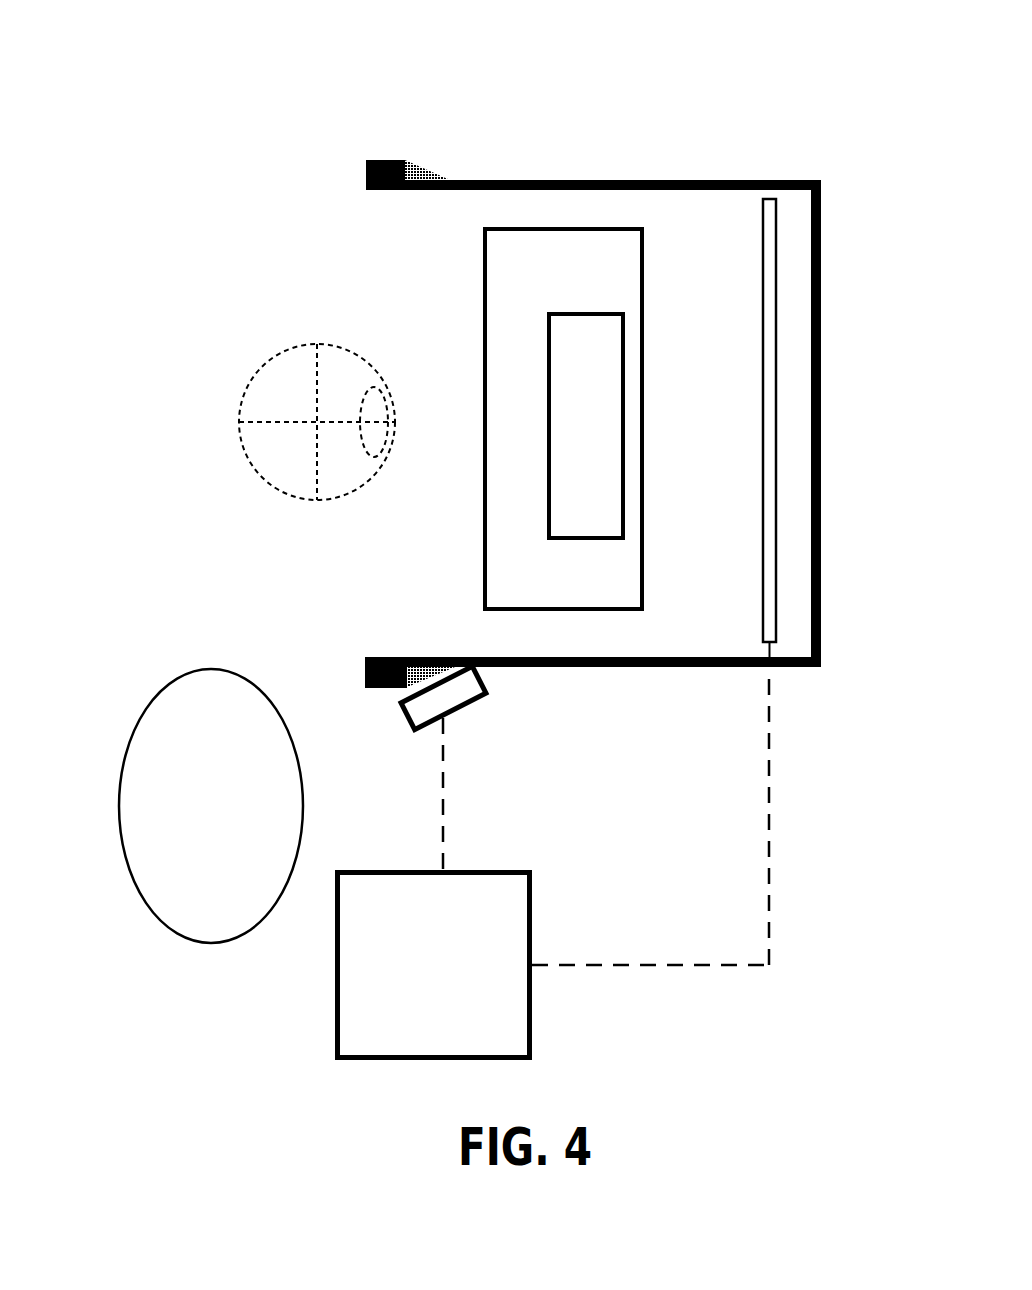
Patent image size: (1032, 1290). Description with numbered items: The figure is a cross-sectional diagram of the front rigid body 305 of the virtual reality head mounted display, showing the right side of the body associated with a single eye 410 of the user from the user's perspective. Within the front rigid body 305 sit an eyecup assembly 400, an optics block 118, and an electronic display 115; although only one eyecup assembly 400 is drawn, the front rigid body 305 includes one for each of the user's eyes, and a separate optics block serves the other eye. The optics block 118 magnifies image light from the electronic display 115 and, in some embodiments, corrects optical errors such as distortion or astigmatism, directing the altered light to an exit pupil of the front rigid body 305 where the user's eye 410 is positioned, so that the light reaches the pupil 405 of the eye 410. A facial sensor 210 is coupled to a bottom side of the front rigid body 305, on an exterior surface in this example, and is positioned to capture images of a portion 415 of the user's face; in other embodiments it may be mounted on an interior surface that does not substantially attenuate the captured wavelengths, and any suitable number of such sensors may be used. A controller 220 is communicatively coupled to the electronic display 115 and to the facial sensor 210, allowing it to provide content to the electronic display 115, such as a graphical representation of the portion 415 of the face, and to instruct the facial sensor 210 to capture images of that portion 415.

The front rigid body 305 is at (667, 180).
The eyecup assembly 400 is at (550, 258).
The optics block 118 is at (590, 350).
The electronic display 115 is at (771, 200).
The eye 410 is at (277, 352).
The pupil 405 is at (362, 407).
The facial sensor 210 is at (455, 713).
The controller 220 is at (455, 996).
The portion of the user's face 415 is at (120, 810).